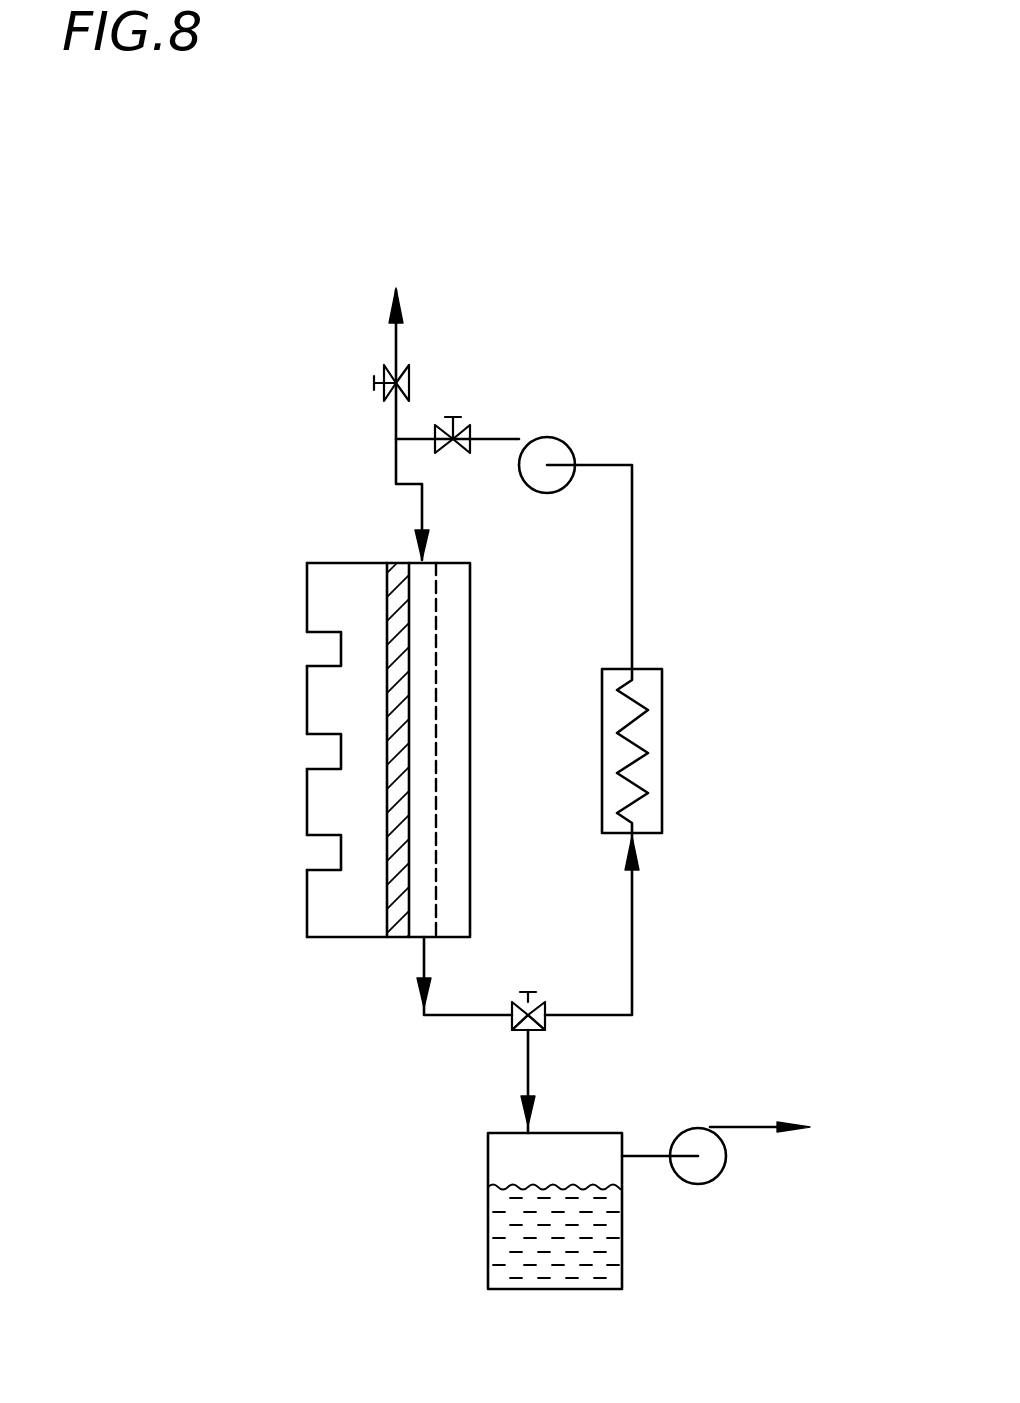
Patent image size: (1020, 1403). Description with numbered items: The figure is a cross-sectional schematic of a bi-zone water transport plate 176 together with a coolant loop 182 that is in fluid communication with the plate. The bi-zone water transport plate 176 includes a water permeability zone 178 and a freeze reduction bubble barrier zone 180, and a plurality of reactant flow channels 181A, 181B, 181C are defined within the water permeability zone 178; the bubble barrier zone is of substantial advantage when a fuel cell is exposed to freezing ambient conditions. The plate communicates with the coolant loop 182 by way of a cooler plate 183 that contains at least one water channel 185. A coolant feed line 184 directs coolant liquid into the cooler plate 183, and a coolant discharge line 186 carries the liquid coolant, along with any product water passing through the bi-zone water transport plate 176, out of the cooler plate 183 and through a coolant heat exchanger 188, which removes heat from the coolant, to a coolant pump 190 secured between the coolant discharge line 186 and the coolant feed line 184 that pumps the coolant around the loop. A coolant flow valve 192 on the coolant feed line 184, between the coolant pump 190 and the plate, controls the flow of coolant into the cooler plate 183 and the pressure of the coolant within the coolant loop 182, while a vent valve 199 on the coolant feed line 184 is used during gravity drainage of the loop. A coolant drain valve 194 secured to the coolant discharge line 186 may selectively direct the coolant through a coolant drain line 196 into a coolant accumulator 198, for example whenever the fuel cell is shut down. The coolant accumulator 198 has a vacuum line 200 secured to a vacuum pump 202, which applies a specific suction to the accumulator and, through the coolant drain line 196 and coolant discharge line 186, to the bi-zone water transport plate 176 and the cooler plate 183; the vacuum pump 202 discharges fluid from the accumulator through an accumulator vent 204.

The bi-zone water transport plate 176 is at (256, 486).
The water permeability zone 178 is at (340, 697).
The freeze reduction bubble barrier zone 180 is at (397, 562).
The reactant flow channel 181A is at (312, 650).
The reactant flow channel 181B is at (312, 752).
The reactant flow channel 181C is at (312, 853).
The coolant loop 182 is at (577, 880).
The cooler plate 183 is at (453, 638).
The coolant feed line 184 is at (423, 498).
The water channel 185 is at (455, 765).
The coolant discharge line 186 is at (424, 958).
The coolant heat exchanger 188 is at (650, 722).
The coolant pump 190 is at (562, 441).
The coolant flow valve 192 is at (460, 428).
The coolant drain valve 194 is at (513, 1023).
The coolant drain line 196 is at (527, 1073).
The coolant accumulator 198 is at (622, 1265).
The vent valve 199 is at (410, 373).
The vacuum line 200 is at (645, 1157).
The vacuum pump 202 is at (725, 1168).
The accumulator vent 204 is at (742, 1123).